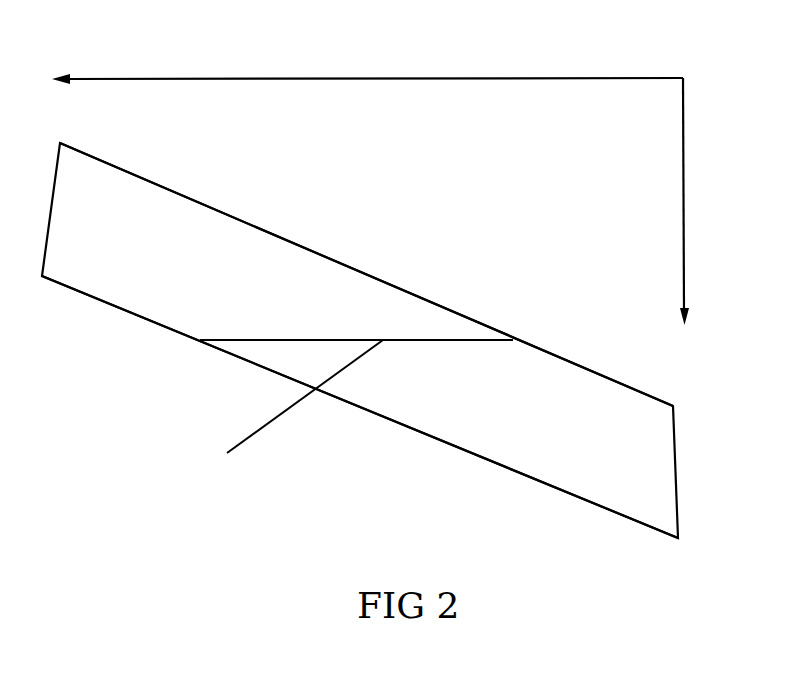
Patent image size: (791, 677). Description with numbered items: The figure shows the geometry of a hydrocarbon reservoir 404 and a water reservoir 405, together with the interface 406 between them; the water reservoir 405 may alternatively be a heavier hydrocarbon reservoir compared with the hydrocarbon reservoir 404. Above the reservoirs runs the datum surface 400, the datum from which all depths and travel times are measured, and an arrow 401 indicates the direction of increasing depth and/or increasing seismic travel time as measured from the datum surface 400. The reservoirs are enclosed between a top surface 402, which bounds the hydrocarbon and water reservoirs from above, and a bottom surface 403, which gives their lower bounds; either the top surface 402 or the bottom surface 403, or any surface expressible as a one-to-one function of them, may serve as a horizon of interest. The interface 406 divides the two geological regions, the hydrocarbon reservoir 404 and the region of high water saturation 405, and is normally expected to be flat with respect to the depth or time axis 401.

The datum surface 400 is at (298, 79).
The direction of increasing depth and/or seismic travel time 401 is at (683, 221).
The top surface 402 is at (188, 197).
The bottom surface 403 is at (88, 297).
The hydrocarbon reservoir 404 is at (360, 340).
The water reservoir 405 is at (366, 374).
The interface 406 is at (286, 408).